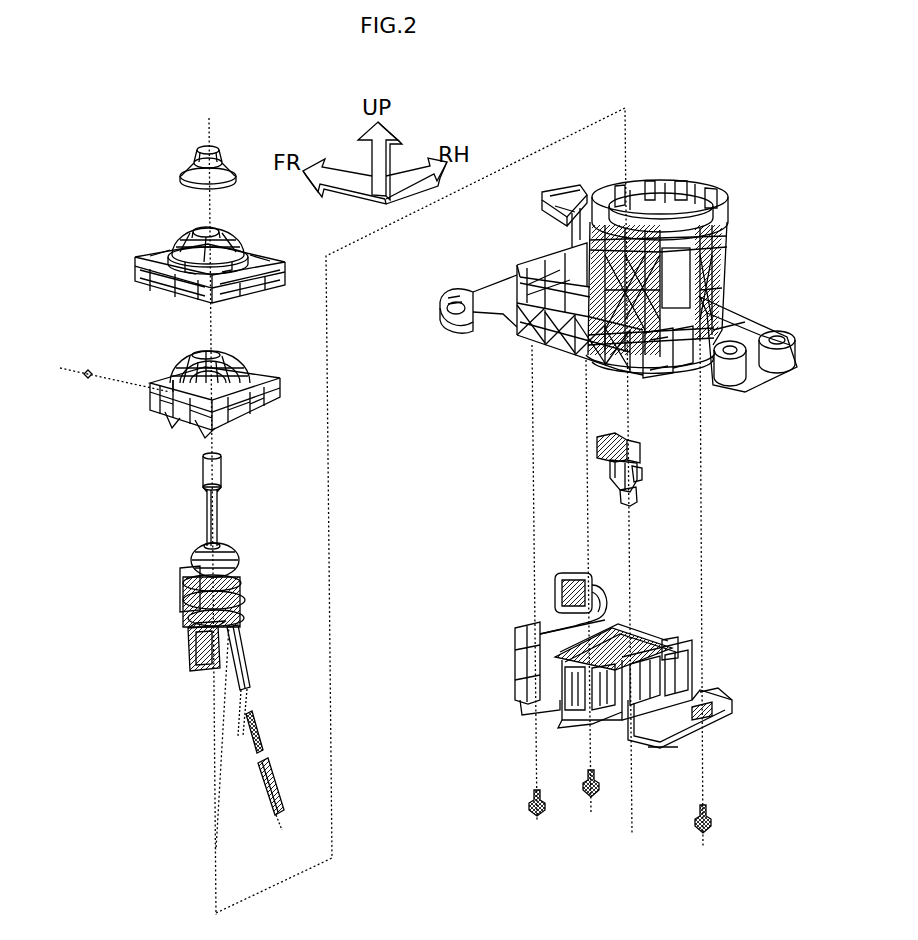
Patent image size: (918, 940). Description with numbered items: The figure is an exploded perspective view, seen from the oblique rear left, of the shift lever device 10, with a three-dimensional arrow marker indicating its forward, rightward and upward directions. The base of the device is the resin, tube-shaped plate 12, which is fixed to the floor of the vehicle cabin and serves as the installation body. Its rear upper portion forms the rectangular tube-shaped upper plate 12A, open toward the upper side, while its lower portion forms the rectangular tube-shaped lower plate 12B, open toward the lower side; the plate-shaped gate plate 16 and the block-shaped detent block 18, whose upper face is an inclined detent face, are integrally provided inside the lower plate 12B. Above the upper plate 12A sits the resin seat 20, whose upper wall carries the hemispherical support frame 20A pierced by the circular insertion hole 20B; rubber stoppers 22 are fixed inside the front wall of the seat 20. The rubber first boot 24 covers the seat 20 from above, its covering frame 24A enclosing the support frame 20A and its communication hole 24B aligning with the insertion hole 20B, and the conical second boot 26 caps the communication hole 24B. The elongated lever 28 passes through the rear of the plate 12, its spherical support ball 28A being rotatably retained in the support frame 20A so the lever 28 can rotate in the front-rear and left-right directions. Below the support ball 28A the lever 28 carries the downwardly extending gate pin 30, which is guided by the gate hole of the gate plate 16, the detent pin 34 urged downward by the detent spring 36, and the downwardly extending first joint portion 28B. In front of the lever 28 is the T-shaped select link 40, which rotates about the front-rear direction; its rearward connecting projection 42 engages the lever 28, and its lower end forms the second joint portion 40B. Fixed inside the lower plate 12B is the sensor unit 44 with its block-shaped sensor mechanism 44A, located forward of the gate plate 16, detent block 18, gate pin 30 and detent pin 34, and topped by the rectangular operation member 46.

The shift lever device 10 is at (115, 192).
The plate 12 is at (720, 207).
The upper plate 12A is at (732, 257).
The lower plate 12B is at (553, 358).
The gate plate 16 is at (668, 353).
The detent block 18 is at (723, 316).
The seat 20 is at (165, 379).
The support frame 20A is at (232, 372).
The insertion hole 20B is at (200, 352).
The stopper 22 is at (89, 370).
The first boot 24 is at (146, 262).
The covering frame 24A is at (232, 249).
The communication hole 24B is at (200, 233).
The second boot 26 is at (200, 155).
The lever 28 is at (200, 469).
The support ball 28A is at (198, 560).
The first joint portion 28B is at (209, 670).
The gate pin 30 is at (231, 727).
The detent pin 34 is at (275, 796).
The detent spring 36 is at (258, 736).
The select link 40 is at (648, 440).
The second joint portion 40B is at (630, 495).
The connecting projection 42 is at (641, 478).
The sensor unit 44 is at (714, 692).
The sensor mechanism 44A is at (632, 630).
The operation member 46 is at (660, 644).